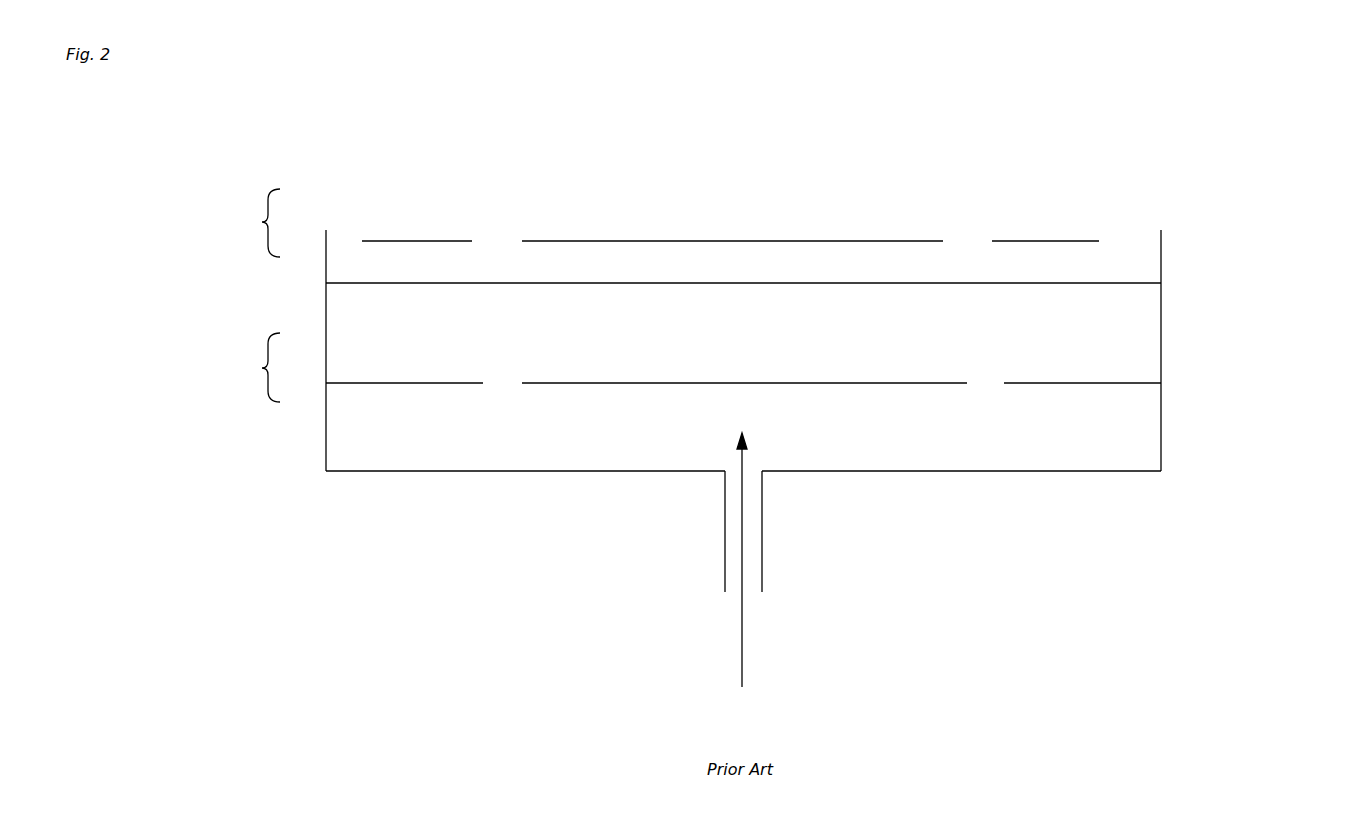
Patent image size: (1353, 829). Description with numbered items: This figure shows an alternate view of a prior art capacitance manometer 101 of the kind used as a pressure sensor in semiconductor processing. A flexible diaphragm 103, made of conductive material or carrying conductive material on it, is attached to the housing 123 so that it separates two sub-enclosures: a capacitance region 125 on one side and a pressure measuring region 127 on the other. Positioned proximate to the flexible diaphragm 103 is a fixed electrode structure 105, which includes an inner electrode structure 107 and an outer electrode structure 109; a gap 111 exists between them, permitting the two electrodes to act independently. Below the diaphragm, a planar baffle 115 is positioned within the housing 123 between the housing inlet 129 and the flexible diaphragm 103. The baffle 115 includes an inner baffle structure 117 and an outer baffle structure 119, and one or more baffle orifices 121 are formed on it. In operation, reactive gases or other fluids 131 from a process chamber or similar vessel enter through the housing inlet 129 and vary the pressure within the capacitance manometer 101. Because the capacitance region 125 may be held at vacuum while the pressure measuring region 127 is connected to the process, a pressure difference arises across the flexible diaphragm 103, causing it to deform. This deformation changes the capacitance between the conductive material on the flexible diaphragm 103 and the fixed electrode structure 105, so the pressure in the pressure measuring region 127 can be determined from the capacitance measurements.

The capacitance manometer 101 is at (1275, 178).
The flexible diaphragm 103 is at (364, 282).
The fixed electrode structure 105 is at (262, 222).
The inner electrode structure 107 is at (833, 240).
The outer electrode structure 109 is at (442, 240).
The gap 111 is at (976, 242).
The baffle 115 is at (262, 368).
The inner baffle structure 117 is at (828, 383).
The outer baffle structure 119 is at (411, 383).
The baffle orifices 121 is at (489, 387).
The housing 123 is at (1162, 312).
The capacitance region 125 is at (742, 264).
The pressure measuring region 127 is at (742, 332).
The housing inlet 129 is at (727, 557).
The reactive gases or other fluids 131 is at (742, 653).